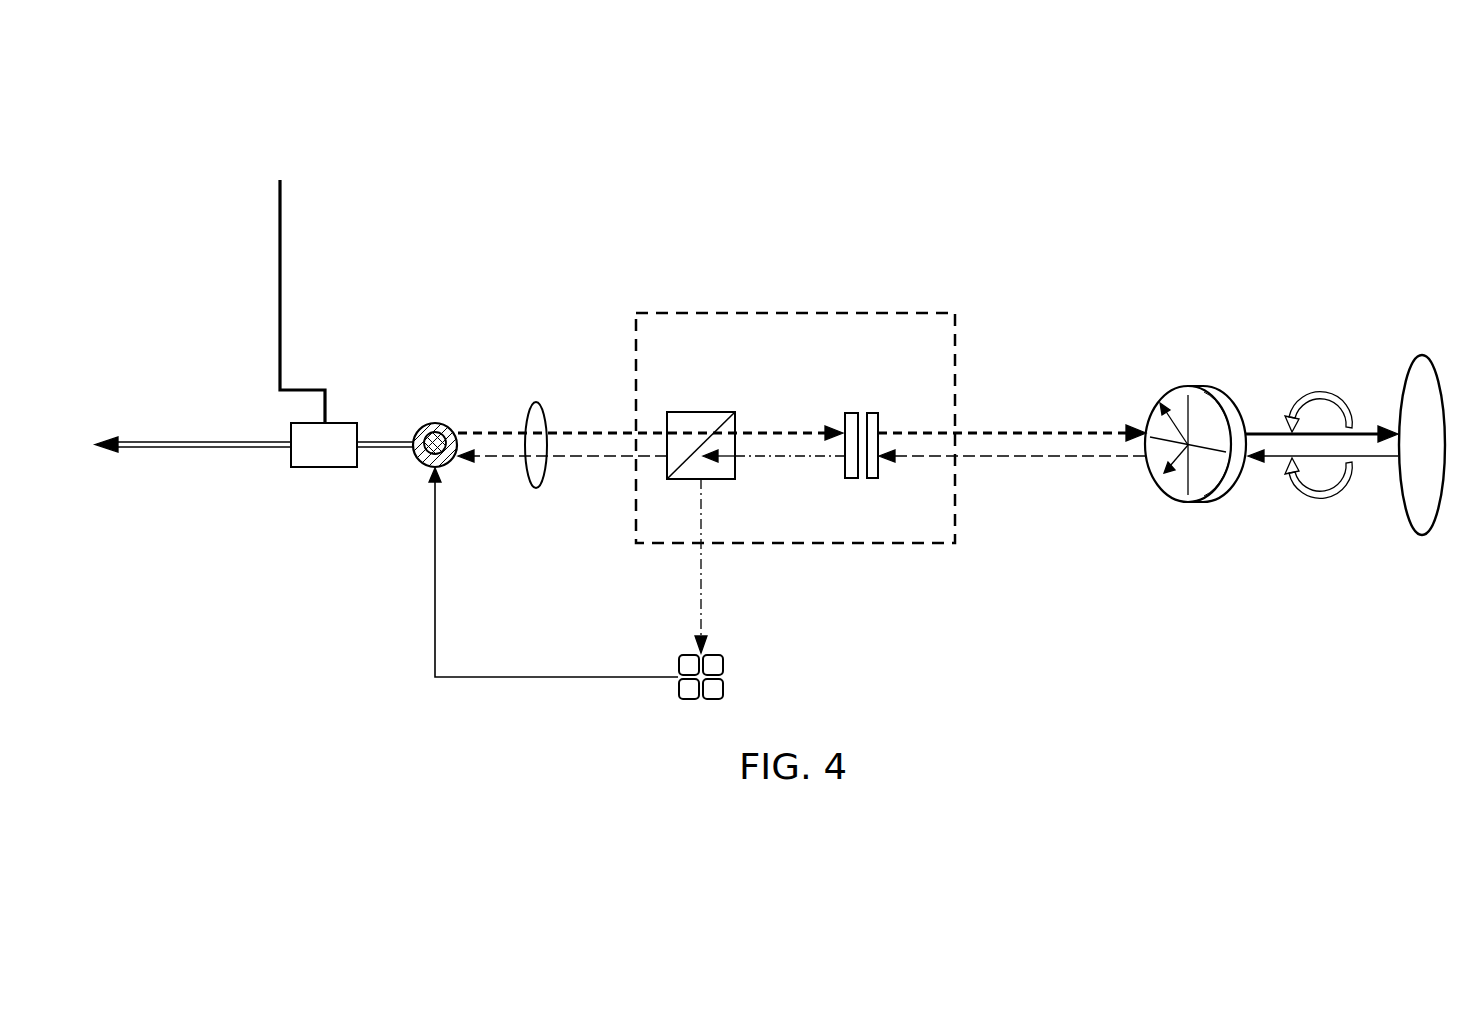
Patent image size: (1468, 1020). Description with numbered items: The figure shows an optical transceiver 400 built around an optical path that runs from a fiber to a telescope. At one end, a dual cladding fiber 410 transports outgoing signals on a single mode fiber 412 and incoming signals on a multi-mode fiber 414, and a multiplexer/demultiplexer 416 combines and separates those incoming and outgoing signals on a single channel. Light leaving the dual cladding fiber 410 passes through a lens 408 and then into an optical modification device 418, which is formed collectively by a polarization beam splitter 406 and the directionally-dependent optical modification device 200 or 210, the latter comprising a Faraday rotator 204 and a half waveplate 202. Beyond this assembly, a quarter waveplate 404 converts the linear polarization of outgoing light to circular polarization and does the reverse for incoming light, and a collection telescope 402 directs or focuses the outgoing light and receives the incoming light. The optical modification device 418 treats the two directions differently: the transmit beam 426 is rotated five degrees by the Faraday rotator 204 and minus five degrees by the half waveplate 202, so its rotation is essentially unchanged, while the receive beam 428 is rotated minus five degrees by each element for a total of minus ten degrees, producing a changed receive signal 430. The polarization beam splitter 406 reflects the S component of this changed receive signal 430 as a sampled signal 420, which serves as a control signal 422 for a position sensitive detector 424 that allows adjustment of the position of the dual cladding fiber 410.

The optical transceiver 400 is at (1045, 152).
The collection telescope 402 is at (1420, 356).
The quarter waveplate 404 is at (1211, 503).
The polarization beam splitter (PBS) 406 is at (701, 410).
The lens 408 is at (535, 401).
The dual cladding fiber (DCF) 410 is at (416, 408).
The single mode fiber (SMF) 412 is at (283, 245).
The multi-mode (MM) fiber 414 is at (180, 450).
The multiplexer/demultiplexer (Mux/Demux) 416 is at (335, 468).
The optical modification device (OMD) 418 is at (850, 553).
The sampled signal 420 is at (698, 592).
The control signal 422 is at (432, 622).
The position sensitive detector 424 is at (727, 688).
The transmit (Tx) beam 426 is at (774, 431).
The receive (Rx) beam 428 is at (1080, 462).
The changed receive signal 430 is at (782, 461).
The directionally-dependent optical modification device 200 is at (873, 435).
The directionally-dependent optical modification device 210 is at (873, 435).
The half waveplate 202 is at (874, 481).
The Faraday rotator 204 is at (851, 481).